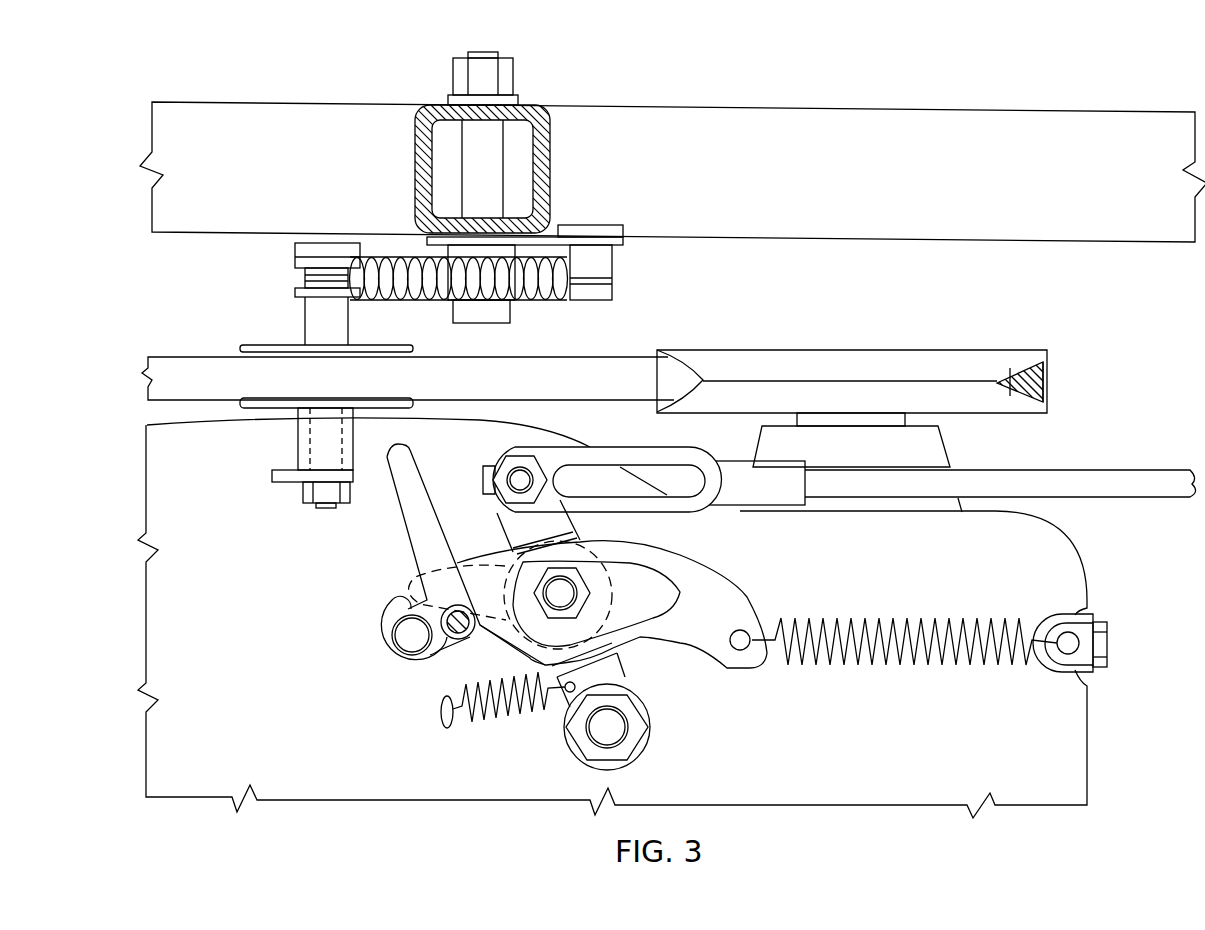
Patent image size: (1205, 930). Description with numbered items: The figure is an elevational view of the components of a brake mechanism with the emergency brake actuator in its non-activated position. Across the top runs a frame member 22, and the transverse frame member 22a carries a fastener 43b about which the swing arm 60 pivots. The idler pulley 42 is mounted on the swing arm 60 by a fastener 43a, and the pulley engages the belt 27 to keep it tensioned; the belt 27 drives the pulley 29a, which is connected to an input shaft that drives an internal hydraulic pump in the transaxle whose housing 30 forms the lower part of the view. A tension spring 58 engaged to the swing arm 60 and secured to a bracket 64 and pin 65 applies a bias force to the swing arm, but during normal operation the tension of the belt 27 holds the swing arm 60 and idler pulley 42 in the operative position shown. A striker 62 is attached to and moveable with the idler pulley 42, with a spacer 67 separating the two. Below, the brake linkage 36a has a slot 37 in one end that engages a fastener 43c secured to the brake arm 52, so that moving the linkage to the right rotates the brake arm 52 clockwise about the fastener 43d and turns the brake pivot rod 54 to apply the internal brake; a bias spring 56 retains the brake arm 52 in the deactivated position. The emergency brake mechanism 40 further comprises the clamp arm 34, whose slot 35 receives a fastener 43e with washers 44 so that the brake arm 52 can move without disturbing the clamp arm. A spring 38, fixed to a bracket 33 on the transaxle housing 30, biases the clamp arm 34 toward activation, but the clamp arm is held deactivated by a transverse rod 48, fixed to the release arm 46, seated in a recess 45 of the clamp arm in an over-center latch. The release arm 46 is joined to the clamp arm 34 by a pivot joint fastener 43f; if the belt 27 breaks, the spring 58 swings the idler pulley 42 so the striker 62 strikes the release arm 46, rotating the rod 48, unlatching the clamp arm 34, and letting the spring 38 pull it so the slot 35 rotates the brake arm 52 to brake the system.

The support member 22 is at (872, 182).
The transverse frame member 22a is at (550, 180).
The fastener 43b is at (486, 55).
The pin 65 is at (607, 224).
The bracket 64 is at (624, 243).
The tension spring 58 is at (392, 300).
The swing arm 60 is at (293, 258).
The fastener 43a is at (303, 313).
The idler pulley 42 is at (270, 345).
The belt 27 is at (535, 352).
The pulley 29a is at (852, 350).
The brake linkage 36a is at (1058, 470).
The transaxle housing 30 is at (940, 578).
The spacer 67 is at (297, 437).
The striker 62 is at (272, 473).
The slot 37 is at (622, 502).
The fastener 43c is at (517, 478).
The clamp arm 34 is at (720, 621).
The slot 35 is at (670, 573).
The fastener 43e is at (563, 593).
The washers 44 is at (647, 617).
The release arm 46 is at (405, 531).
The pivot joint fastener 43f is at (412, 635).
The transverse rod 48 is at (462, 627).
The recess 45 is at (447, 637).
The brake arm 52 is at (625, 673).
The fastener 43d is at (635, 747).
The brake pivot rod 54 is at (607, 727).
The bias spring 56 is at (487, 713).
The spring 38 is at (897, 655).
The bracket 33 is at (1047, 662).
The emergency brake mechanism 40 is at (333, 673).